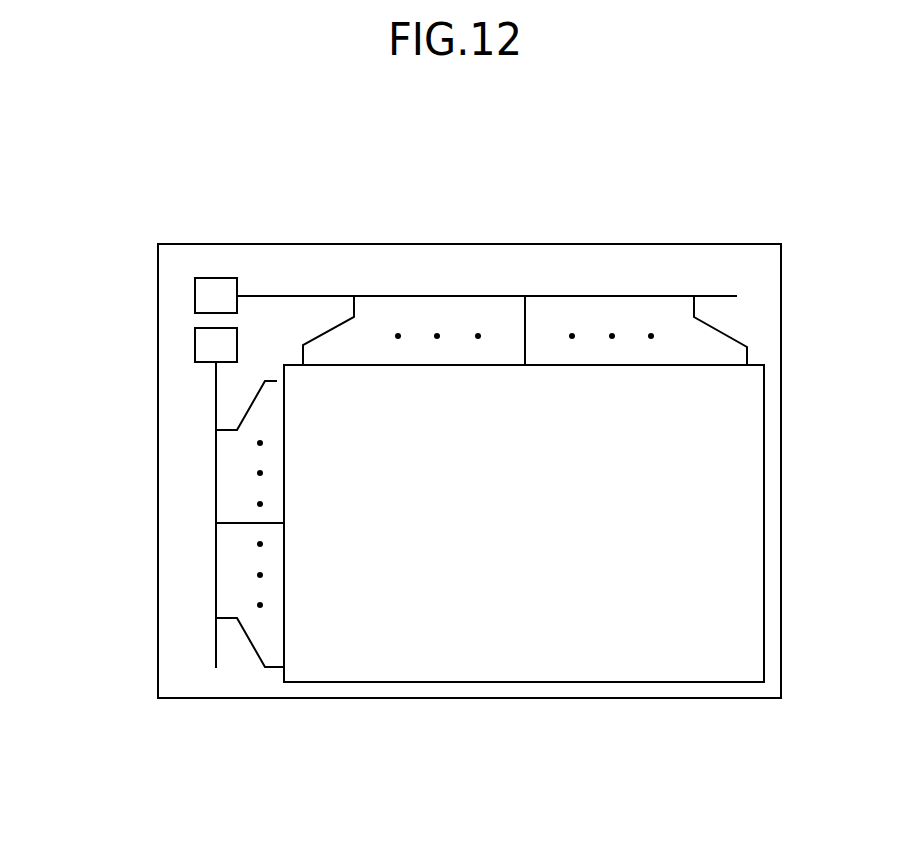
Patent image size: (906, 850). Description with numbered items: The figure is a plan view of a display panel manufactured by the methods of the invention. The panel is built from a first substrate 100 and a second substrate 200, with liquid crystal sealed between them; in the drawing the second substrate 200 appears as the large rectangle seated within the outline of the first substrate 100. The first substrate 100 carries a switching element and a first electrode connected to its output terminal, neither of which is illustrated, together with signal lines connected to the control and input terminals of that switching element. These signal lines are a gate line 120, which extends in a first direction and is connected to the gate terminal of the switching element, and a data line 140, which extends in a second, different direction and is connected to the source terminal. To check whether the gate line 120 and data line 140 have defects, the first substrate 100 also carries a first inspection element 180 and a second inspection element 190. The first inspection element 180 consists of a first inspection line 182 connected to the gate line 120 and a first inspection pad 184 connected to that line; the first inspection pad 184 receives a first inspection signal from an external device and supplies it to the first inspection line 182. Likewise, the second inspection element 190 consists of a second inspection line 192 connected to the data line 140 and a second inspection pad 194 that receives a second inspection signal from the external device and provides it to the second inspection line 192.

The first substrate 100 is at (250, 683).
The second substrate 200 is at (520, 663).
The gate line 120 is at (275, 381).
The data line 140 is at (328, 328).
The first inspection element 180 is at (80, 362).
The first inspection line 182 is at (216, 407).
The first inspection pad 184 is at (194, 343).
The second inspection element 190 is at (290, 178).
The second inspection line 192 is at (275, 296).
The second inspection pad 194 is at (216, 278).